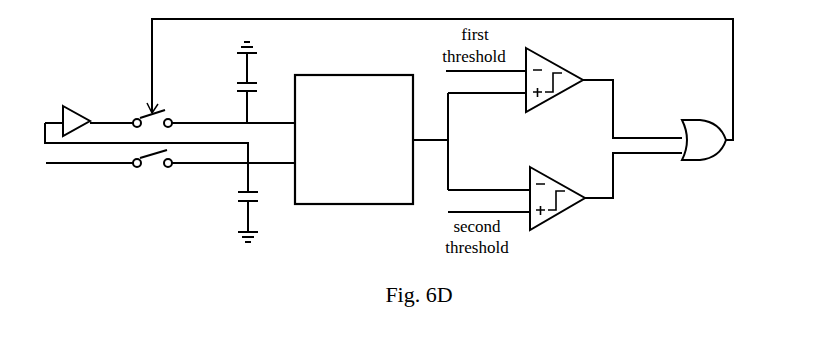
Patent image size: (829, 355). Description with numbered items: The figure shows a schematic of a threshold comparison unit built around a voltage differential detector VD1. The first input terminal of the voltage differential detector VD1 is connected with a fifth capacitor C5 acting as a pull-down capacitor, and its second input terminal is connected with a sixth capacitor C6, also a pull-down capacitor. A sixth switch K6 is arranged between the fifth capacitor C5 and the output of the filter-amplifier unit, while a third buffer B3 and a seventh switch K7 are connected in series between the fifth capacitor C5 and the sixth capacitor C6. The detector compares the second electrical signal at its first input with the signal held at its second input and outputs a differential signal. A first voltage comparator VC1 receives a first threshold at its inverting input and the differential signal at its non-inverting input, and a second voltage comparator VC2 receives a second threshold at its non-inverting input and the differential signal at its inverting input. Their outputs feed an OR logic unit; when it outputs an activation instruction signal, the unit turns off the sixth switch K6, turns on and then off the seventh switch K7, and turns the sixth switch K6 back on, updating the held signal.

The third buffer B3 is at (75, 111).
The seventh switch K7 is at (149, 105).
The sixth switch K6 is at (152, 176).
The sixth capacitor C6 is at (228, 82).
The fifth capacitor C5 is at (234, 192).
The voltage differential detector VD1 is at (354, 139).
The first voltage comparator VC1 is at (554, 75).
The second voltage comparator VC2 is at (557, 193).